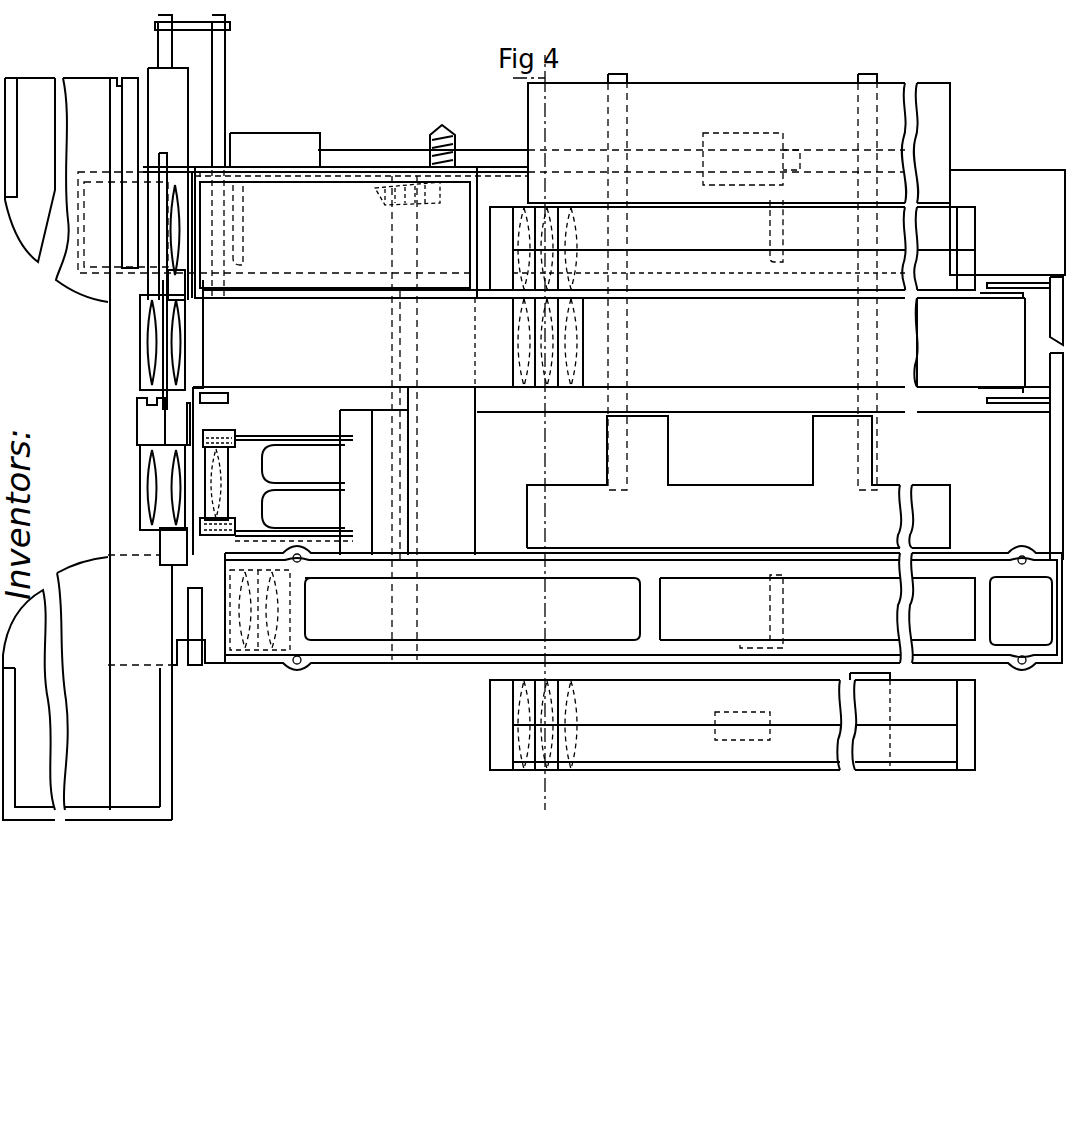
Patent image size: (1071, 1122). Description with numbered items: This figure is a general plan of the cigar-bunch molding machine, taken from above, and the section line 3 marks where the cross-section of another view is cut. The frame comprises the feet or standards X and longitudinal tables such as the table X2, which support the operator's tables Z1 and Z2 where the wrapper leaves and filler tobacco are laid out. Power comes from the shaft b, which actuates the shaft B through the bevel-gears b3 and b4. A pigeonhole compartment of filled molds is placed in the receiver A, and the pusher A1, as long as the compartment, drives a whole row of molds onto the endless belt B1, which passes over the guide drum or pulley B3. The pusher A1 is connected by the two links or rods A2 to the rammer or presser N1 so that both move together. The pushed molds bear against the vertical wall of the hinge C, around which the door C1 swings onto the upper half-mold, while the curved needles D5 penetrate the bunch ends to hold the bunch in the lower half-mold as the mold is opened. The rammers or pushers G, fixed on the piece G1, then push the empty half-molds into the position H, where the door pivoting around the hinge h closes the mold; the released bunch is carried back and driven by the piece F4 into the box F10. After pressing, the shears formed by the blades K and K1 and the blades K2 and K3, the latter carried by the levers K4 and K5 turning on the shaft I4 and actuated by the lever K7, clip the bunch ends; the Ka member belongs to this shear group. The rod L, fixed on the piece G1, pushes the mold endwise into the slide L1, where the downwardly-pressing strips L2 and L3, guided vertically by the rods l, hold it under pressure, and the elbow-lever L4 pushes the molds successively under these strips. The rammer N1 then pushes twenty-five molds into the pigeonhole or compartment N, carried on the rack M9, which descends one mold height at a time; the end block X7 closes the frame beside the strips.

The section line 3 3 is at (538, 437).
The table Z2 is at (71, 444).
The table Z1 is at (95, 674).
The piece G1 is at (189, 157).
The rod L is at (218, 58).
The rammers or pushers G is at (175, 262).
The piece F4 is at (139, 222).
The box F10 is at (196, 210).
The shaft B is at (365, 167).
The feet or standards X is at (797, 598).
The bevel-gear b4 is at (440, 136).
The bevel-gear b3 is at (403, 202).
The shaft b is at (395, 660).
The pusher A1 is at (739, 282).
The links or rods A2 is at (742, 334).
The receiver A is at (732, 248).
The longitudinal table X2 is at (1007, 222).
The endless belt B1 is at (621, 351).
The guide drum or pulley B3 is at (988, 418).
The rammer or presser N1 is at (738, 482).
The downwardly-pressing strip L2 is at (643, 608).
The downwardly-pressing strip L3 is at (352, 630).
The end block X7 is at (1021, 611).
The rods l is at (1022, 678).
The pigeonhole or compartment N is at (732, 721).
The rack M9 is at (742, 732).
The slide L1 is at (202, 631).
The elbow-lever L4 is at (193, 626).
The door C1 is at (142, 305).
The hinge C is at (165, 338).
The curved needles D5 is at (183, 305).
The position of half-mold H is at (135, 465).
The hinge h is at (178, 495).
The shear blade K1 is at (237, 428).
The shear blade K is at (279, 499).
The shear blade K2 is at (227, 540).
The block Ka is at (212, 522).
The shear blade K3 is at (258, 438).
The lever K5 is at (300, 445).
The lever K4 is at (320, 532).
The shaft I4 is at (345, 482).
The lever K7 is at (365, 533).